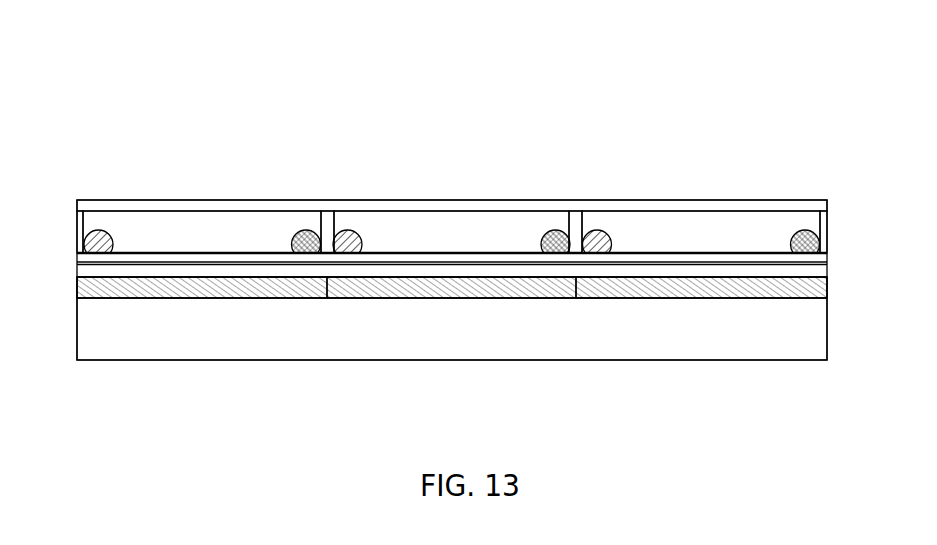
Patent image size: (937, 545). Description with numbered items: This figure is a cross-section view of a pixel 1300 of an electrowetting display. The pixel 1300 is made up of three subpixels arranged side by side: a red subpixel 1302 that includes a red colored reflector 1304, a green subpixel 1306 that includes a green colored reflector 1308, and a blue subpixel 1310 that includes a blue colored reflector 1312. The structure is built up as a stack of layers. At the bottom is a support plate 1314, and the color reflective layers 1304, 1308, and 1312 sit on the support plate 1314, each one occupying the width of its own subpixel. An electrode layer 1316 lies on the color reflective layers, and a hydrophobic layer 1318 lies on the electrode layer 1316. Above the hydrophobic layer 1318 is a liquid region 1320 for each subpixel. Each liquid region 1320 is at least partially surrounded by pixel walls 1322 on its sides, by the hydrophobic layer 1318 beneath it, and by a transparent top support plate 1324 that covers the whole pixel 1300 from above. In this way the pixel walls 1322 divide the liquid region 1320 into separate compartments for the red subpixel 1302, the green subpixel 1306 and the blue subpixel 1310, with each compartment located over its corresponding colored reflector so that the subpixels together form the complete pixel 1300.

The pixel 1300 is at (727, 53).
The red subpixel 1302 is at (205, 183).
The red colored reflector 1304 is at (264, 298).
The green subpixel 1306 is at (448, 186).
The green colored reflector 1308 is at (465, 298).
The blue subpixel 1310 is at (696, 186).
The blue colored reflector 1312 is at (706, 298).
The support plate 1314 is at (142, 341).
The electrode layer 1316 is at (77, 276).
The hydrophobic layer 1318 is at (77, 270).
The liquid region 1320 is at (212, 243).
The pixel walls 1322 is at (77, 257).
The transparent top support plate 1324 is at (173, 200).